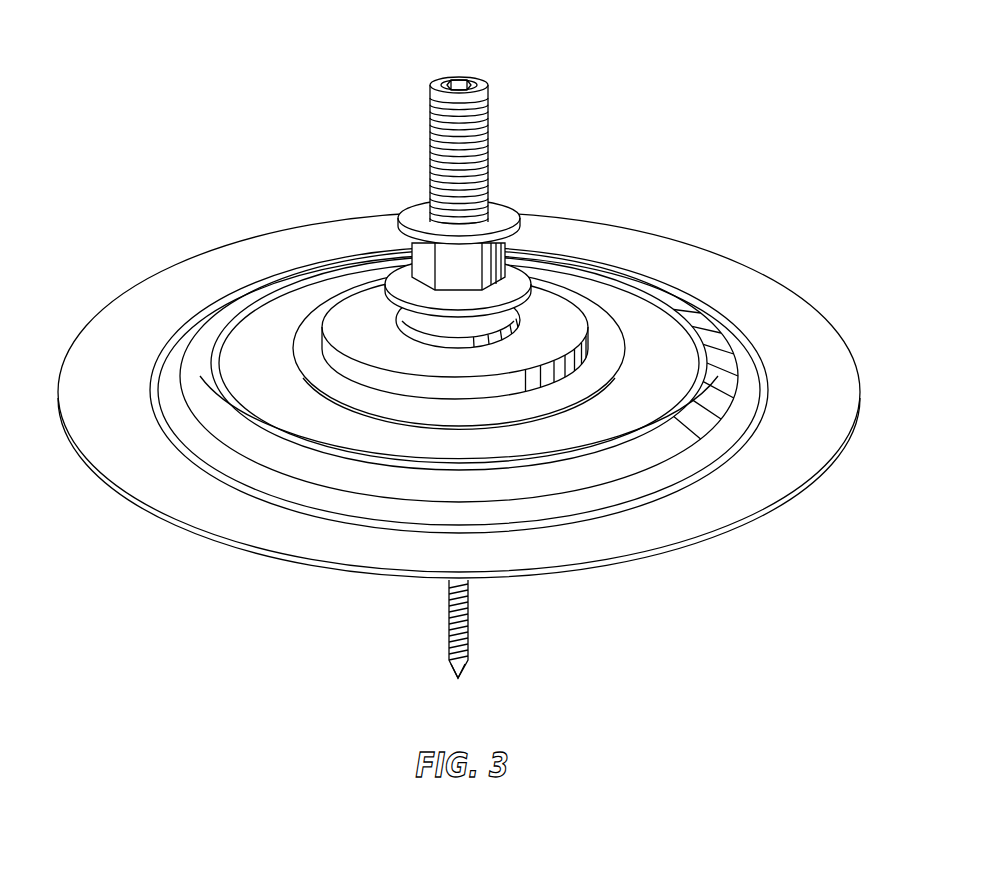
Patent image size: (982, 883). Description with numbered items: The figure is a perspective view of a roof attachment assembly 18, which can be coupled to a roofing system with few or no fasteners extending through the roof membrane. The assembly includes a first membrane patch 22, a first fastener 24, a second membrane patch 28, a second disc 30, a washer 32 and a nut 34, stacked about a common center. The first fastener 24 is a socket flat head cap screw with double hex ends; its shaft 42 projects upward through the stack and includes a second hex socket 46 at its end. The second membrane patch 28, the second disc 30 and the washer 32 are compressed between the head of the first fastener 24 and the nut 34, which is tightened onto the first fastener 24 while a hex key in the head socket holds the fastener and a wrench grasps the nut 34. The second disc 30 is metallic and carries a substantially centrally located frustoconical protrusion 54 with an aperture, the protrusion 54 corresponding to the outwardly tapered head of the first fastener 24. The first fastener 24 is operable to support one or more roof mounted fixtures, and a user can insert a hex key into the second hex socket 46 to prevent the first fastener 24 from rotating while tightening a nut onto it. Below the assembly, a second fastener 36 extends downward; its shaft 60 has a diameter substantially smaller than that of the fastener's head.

The roof attachment assembly 18 is at (459, 349).
The first membrane patch 22 is at (780, 308).
The first fastener 24 is at (482, 143).
The second membrane patch 28 is at (652, 320).
The second disc 30 is at (563, 303).
The washer 32 is at (520, 265).
The nut 34 is at (415, 207).
The second fastener 36 is at (461, 613).
The shaft 42 is at (487, 87).
The second hex socket 46 is at (458, 80).
The frustoconical protrusion 54 is at (393, 318).
The shaft 60 is at (453, 667).